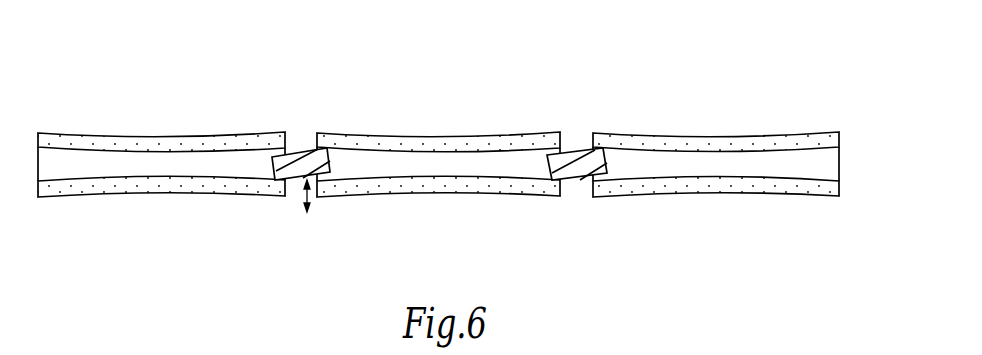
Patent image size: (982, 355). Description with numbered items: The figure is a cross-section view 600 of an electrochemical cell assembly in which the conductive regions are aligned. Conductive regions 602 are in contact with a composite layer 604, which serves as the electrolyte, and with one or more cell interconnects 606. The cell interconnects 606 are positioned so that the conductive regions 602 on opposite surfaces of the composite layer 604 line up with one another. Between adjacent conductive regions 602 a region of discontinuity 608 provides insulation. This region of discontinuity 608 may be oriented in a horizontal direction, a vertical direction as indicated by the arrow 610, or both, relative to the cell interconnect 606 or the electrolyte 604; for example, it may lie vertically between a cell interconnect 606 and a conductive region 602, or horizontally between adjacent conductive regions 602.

The cross-section view 600 is at (770, 40).
The conductive region 602 is at (102, 139).
The composite layer 604 is at (188, 168).
The cell interconnect 606 is at (297, 178).
The region of discontinuity 608 is at (299, 142).
The arrow 610 is at (310, 213).